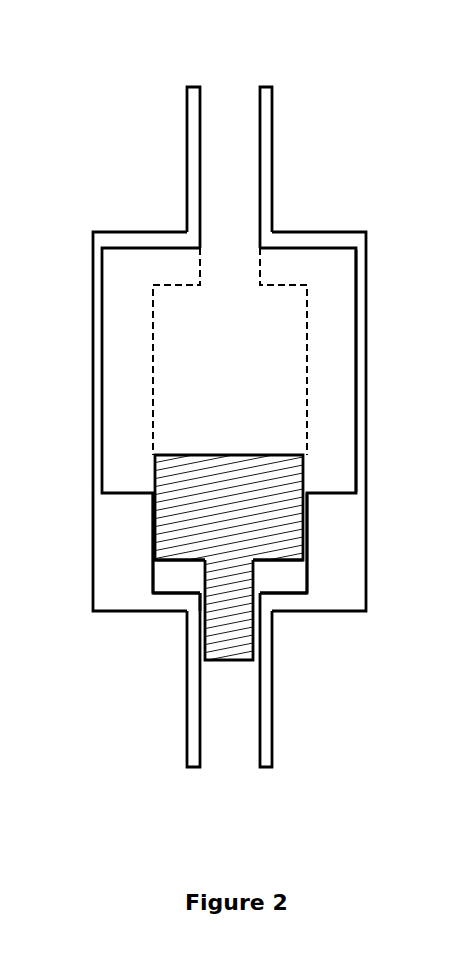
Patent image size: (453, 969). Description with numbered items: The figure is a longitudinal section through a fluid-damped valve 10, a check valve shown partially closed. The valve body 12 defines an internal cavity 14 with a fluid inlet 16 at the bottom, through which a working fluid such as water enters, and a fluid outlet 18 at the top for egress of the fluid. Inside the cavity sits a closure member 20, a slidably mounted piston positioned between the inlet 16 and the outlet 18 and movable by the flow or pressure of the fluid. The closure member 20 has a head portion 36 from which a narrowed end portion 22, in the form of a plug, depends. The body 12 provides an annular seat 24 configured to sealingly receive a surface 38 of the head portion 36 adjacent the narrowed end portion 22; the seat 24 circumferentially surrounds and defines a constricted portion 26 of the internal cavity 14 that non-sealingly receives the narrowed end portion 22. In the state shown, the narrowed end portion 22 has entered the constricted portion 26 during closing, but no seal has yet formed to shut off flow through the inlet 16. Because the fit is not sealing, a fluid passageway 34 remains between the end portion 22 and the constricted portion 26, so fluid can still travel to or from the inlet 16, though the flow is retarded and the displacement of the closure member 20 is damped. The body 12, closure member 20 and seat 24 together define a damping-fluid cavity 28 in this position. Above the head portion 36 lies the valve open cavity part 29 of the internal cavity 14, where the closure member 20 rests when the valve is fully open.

The fluid-damped valve 10 is at (325, 108).
The valve body 12 is at (92, 237).
The internal cavity 14 is at (271, 353).
The fluid inlet 16 is at (241, 757).
The fluid outlet 18 is at (239, 139).
The closure member 20 is at (234, 515).
The narrowed end portion 22 is at (230, 642).
The seat 24 is at (280, 595).
The constricted portion 26 is at (196, 604).
The damping-fluid cavity 28 is at (293, 572).
The valve open cavity part 29 is at (333, 393).
The fluid passageway 34 is at (262, 650).
The head portion 36 is at (273, 522).
The surface 38 is at (273, 563).